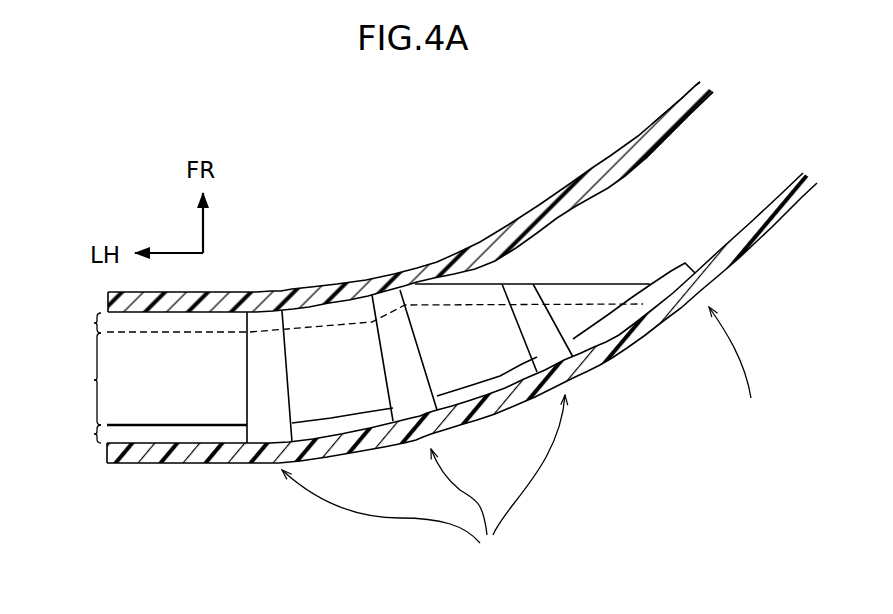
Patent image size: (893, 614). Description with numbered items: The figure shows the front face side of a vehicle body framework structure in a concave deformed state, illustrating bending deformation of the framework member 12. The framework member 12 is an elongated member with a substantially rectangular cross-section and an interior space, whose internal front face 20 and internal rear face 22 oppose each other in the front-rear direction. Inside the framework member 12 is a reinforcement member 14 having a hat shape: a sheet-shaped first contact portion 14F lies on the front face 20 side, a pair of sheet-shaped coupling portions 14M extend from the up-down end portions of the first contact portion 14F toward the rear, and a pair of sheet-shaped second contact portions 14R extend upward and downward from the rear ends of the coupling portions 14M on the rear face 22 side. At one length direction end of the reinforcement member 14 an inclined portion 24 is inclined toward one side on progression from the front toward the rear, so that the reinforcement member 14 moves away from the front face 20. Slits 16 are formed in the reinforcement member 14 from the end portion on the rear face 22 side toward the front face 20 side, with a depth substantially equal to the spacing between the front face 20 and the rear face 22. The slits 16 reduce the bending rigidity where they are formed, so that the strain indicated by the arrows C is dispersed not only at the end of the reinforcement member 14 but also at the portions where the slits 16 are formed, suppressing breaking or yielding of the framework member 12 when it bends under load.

The framework member 12 is at (585, 172).
The reinforcement member 14 is at (631, 281).
The first contact portion 14F is at (73, 324).
The coupling portions 14M is at (72, 379).
The second contact portions 14R is at (73, 436).
The slits 16 is at (270, 347).
The internal front face 20 is at (677, 134).
The internal rear face 22 is at (750, 228).
The inclined portion 24 is at (566, 284).
The arrows C is at (521, 438).